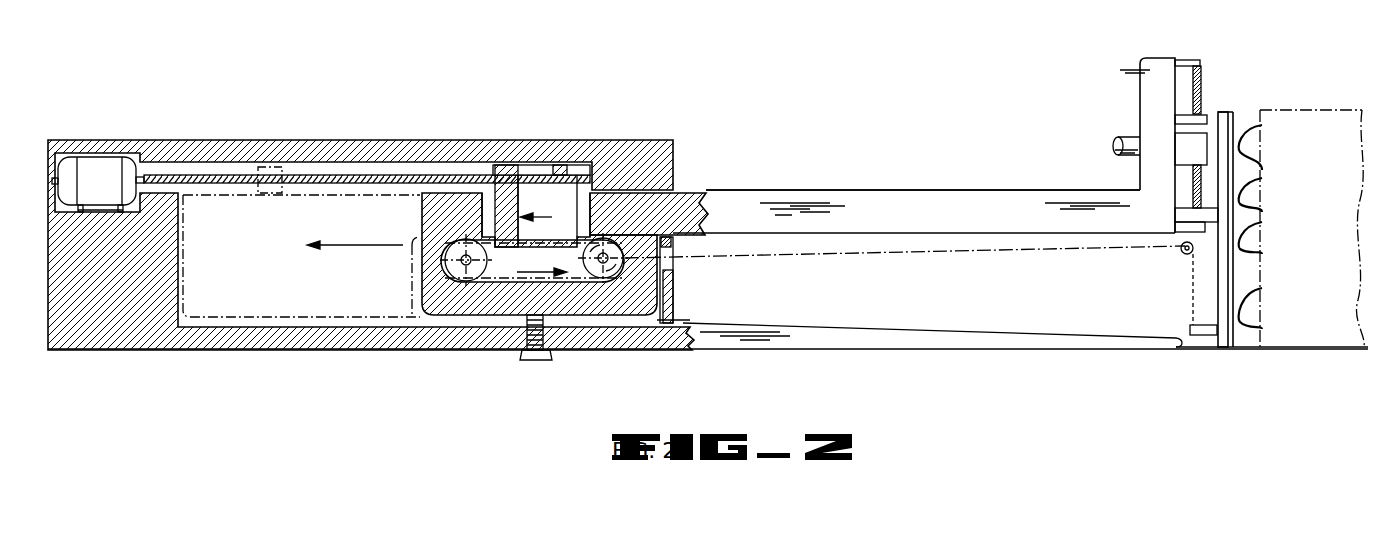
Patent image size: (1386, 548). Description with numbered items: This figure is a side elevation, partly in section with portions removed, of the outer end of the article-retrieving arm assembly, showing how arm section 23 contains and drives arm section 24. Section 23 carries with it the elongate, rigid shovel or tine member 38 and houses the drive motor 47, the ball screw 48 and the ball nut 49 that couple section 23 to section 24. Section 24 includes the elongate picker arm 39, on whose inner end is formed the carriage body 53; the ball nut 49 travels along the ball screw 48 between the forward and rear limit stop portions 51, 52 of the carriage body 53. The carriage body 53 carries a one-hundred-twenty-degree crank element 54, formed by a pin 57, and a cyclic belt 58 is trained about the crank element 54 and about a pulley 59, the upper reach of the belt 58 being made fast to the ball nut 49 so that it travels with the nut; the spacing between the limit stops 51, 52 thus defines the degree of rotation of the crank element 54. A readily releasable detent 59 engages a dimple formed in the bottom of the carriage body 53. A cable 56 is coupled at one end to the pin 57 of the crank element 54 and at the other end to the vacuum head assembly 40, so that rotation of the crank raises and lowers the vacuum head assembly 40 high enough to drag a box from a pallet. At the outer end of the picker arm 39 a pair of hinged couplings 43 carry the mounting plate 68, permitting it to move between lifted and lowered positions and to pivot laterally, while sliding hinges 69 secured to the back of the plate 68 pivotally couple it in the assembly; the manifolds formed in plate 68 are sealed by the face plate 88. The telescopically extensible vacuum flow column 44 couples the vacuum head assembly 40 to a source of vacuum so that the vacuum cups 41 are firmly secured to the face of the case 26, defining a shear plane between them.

The arm section 23 is at (432, 140).
The arm section 24 is at (722, 190).
The case 26 is at (1326, 289).
The tine member 38 is at (905, 330).
The picker arm 39 is at (883, 207).
The vacuum head assembly 40 is at (1240, 353).
The vacuum cups 41 is at (1255, 290).
The hinged couplings 43 is at (1198, 66).
The vacuum flow column 44 is at (1130, 137).
The drive motor 47 is at (108, 190).
The ball screw 48 is at (327, 177).
The ball nut 49 is at (563, 163).
The forward limit stop portion 51 is at (600, 208).
The rear limit stop portion 52 is at (482, 217).
The carriage body 53 is at (422, 288).
The crank element 54 is at (655, 283).
The cable 56 is at (778, 258).
The pin 57 is at (660, 262).
The cyclic belt 58 is at (495, 278).
The pulley 59 is at (458, 268).
The mounting plate 68 is at (1222, 112).
The sliding hinges 69 is at (1218, 212).
The face plate 88 is at (1235, 130).